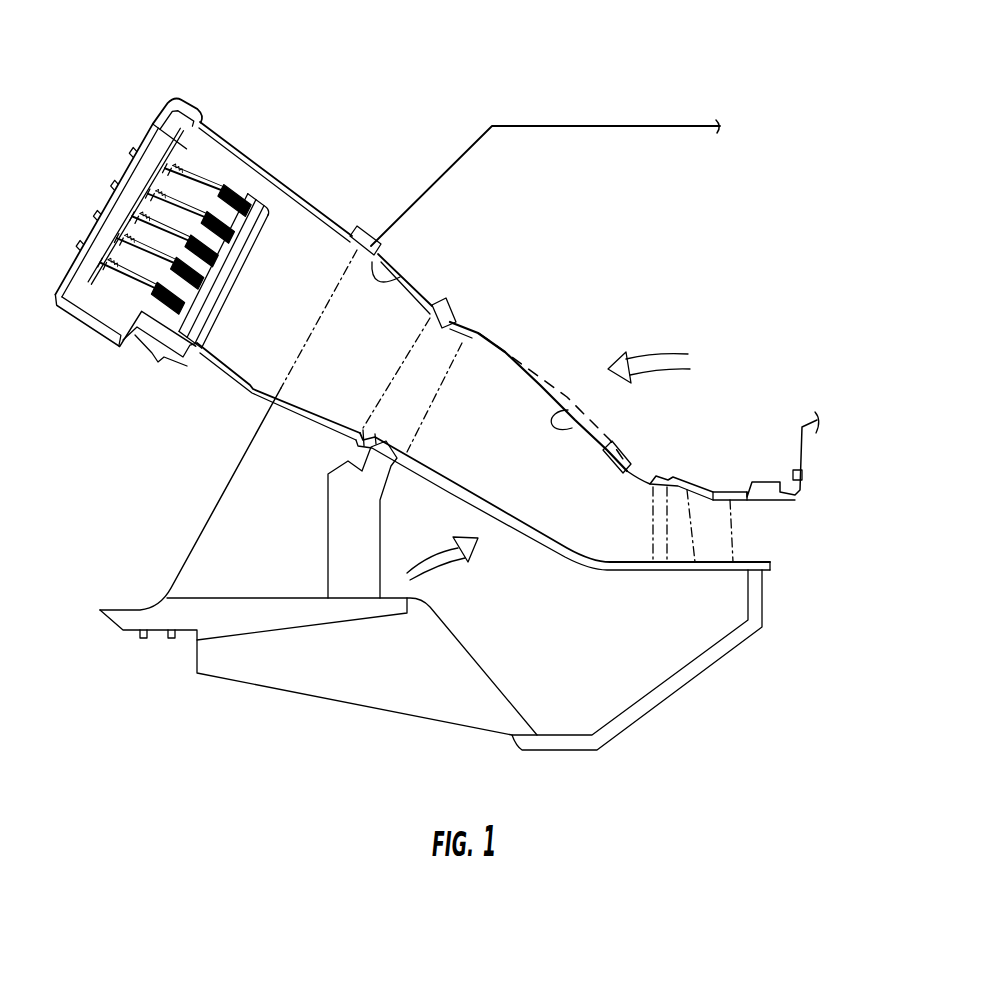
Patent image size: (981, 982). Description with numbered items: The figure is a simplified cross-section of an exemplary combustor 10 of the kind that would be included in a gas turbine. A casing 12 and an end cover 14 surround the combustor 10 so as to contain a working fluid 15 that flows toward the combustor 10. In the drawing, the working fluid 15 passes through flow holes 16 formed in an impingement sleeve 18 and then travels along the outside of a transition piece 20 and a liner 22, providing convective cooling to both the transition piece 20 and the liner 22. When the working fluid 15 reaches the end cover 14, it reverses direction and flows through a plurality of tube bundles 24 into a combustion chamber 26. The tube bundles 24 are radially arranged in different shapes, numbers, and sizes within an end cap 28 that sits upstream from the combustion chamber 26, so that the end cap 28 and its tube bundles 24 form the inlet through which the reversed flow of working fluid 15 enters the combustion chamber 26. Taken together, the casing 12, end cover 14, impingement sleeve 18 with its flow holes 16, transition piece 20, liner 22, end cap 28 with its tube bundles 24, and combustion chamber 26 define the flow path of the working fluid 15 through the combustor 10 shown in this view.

The combustor 10 is at (324, 100).
The casing 12 is at (494, 125).
The end cover 14 is at (84, 258).
The working fluid 15 is at (650, 357).
The flow holes 16 is at (479, 340).
The impingement sleeve 18 is at (516, 350).
The transition piece 20 is at (577, 425).
The liner 22 is at (390, 277).
The tube bundles 24 is at (172, 293).
The combustion chamber 26 is at (292, 312).
The end cap 28 is at (160, 359).